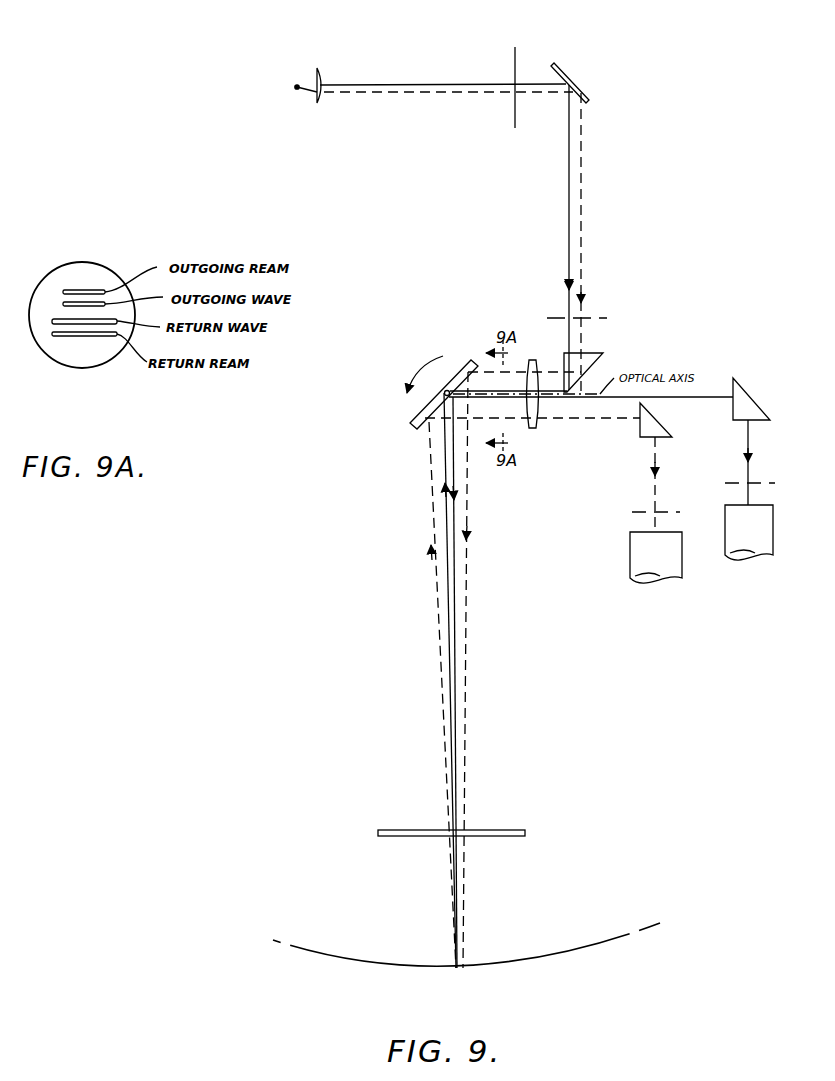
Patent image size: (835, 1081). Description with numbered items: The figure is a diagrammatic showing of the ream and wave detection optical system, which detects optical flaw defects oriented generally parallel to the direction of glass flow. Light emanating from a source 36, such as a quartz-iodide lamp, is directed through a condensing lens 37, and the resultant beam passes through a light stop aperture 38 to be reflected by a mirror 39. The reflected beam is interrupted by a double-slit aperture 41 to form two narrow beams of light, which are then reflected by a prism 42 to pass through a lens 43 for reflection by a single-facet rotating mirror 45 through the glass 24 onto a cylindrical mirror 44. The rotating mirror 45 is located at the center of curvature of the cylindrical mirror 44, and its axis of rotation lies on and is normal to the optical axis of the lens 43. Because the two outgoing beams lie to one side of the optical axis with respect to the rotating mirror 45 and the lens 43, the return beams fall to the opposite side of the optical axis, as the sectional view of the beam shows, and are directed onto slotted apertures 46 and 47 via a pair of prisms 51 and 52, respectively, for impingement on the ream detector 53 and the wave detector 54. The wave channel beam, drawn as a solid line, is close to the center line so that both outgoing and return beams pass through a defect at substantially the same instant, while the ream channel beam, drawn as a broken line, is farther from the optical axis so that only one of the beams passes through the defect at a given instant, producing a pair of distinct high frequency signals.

The glass 24 is at (525, 830).
The source 36 is at (296, 88).
The condensing lens 37 is at (320, 73).
The light stop aperture 38 is at (517, 55).
The mirror 39 is at (557, 68).
The double-slit aperture 41 is at (603, 317).
The prism 42 is at (603, 353).
The lens 43 is at (537, 430).
The cylindrical mirror 44 is at (484, 965).
The single-facet rotating mirror 45 is at (412, 427).
The slotted aperture 46 is at (677, 512).
The slotted aperture 47 is at (772, 482).
The prism 51 is at (640, 436).
The prism 52 is at (735, 420).
The ream detector 53 is at (642, 568).
The wave detector 54 is at (745, 550).